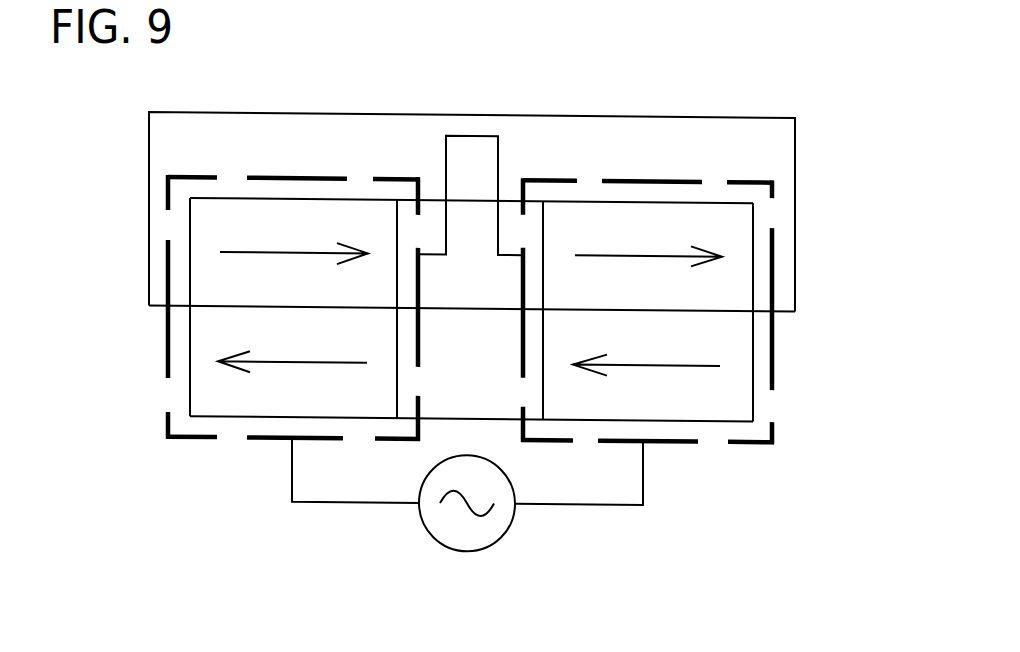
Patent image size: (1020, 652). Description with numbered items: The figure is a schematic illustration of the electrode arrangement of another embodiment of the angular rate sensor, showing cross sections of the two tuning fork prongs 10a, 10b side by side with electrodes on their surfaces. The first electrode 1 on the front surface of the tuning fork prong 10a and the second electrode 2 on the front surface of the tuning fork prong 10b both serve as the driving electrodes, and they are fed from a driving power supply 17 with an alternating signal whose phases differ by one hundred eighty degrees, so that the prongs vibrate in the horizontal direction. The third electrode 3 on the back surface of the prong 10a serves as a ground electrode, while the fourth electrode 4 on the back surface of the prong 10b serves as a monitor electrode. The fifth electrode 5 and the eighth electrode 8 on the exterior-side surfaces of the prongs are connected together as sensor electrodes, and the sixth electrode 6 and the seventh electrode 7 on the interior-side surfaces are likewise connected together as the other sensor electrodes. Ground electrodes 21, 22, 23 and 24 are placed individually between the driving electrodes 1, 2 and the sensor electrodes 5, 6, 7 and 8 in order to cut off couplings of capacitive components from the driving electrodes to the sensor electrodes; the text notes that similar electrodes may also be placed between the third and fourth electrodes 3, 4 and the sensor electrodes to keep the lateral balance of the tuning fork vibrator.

The first electrode 1 is at (268, 440).
The second electrode 2 is at (629, 436).
The third electrode 3 is at (635, 172).
The fourth electrode 4 is at (312, 173).
The fifth electrode 5 is at (163, 344).
The sixth electrode 6 is at (418, 348).
The seventh electrode 7 is at (518, 360).
The eighth electrode 8 is at (772, 373).
The tuning fork prong 10a is at (210, 223).
The tuning fork prong 10b is at (698, 214).
The driving power supply 17 is at (442, 541).
The ground electrode 21 is at (192, 440).
The ground electrode 22 is at (390, 438).
The ground electrode 23 is at (557, 437).
The ground electrode 24 is at (745, 438).